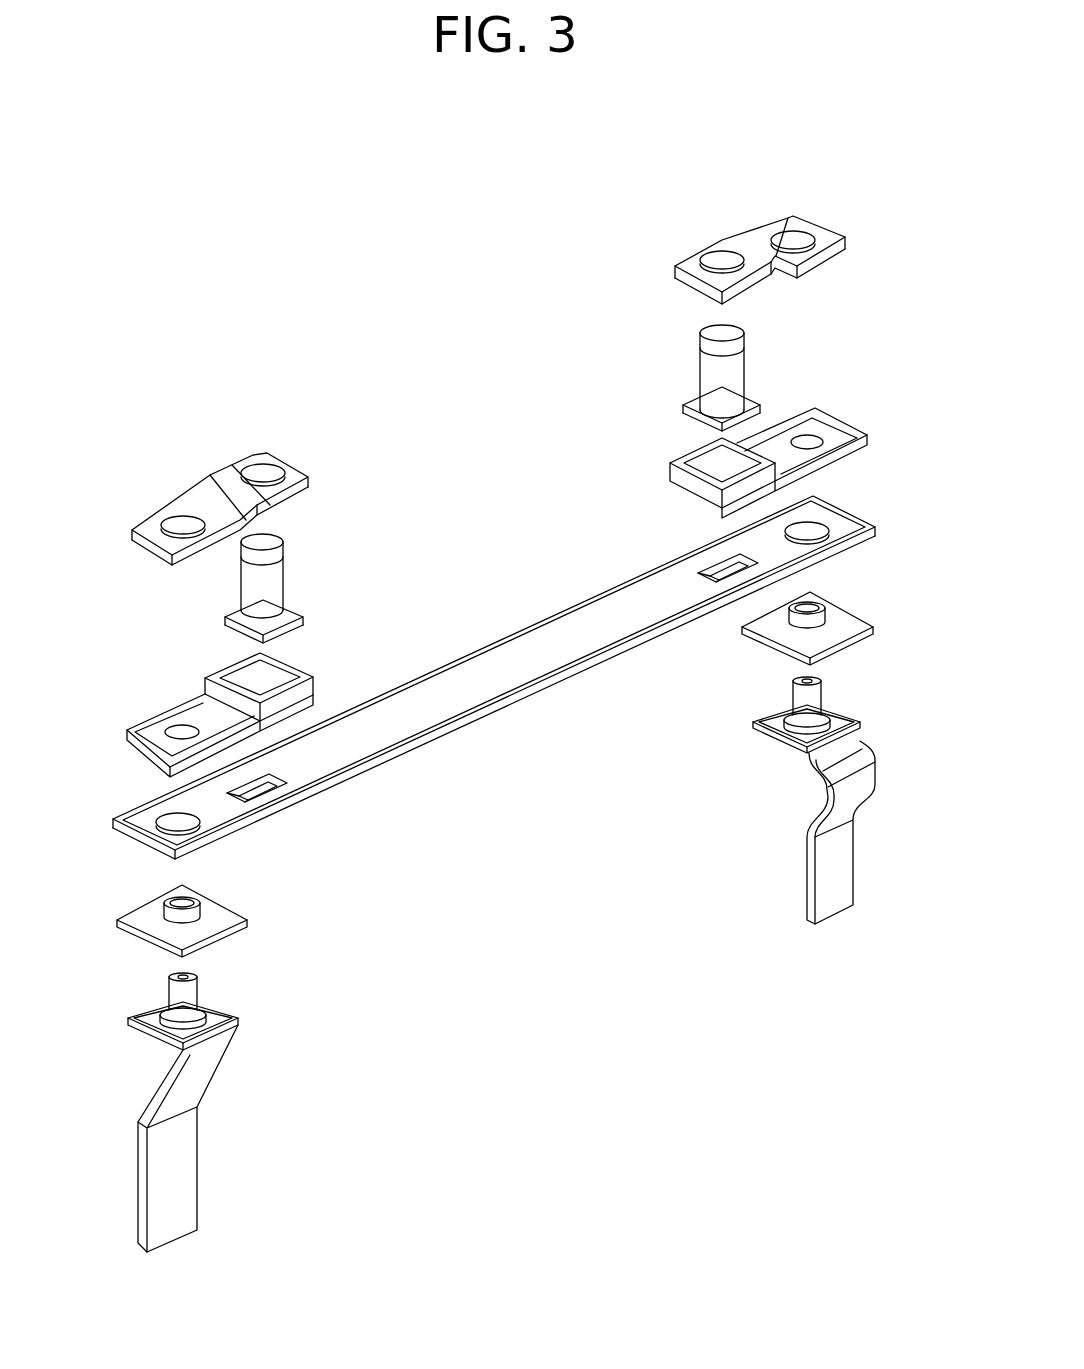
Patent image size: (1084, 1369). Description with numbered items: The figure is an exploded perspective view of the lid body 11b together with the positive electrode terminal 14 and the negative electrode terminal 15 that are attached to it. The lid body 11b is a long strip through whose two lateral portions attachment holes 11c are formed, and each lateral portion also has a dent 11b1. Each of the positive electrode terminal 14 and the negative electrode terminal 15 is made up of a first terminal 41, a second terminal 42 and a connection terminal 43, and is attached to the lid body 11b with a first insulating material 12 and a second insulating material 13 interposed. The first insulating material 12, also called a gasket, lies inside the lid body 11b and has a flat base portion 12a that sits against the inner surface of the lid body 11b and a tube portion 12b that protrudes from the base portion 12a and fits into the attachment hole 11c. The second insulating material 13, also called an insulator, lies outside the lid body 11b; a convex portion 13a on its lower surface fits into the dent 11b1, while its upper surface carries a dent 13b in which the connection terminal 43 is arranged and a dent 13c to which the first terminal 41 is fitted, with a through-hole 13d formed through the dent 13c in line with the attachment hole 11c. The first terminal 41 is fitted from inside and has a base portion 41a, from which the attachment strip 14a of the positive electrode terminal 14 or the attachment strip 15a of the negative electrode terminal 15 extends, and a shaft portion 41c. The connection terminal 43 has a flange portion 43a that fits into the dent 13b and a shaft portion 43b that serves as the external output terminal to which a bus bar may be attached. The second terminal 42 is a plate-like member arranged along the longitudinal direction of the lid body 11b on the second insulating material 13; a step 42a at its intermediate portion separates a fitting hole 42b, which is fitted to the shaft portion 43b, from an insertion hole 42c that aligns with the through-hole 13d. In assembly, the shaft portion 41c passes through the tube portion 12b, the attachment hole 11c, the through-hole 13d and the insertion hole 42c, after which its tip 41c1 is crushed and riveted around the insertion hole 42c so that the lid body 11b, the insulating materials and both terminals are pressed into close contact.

The lid body 11b is at (524, 671).
The dent 11b1 is at (285, 780).
The attachment hole 11c is at (198, 818).
The first insulating material 12 is at (497, 757).
The base portion 12a is at (220, 922).
The tube portion 12b is at (215, 910).
The second insulating material 13 is at (501, 561).
The convex portion 13a is at (274, 680).
The dent 13b is at (318, 686).
The dent 13c is at (190, 688).
The through-hole 13d is at (168, 725).
The positive electrode terminal 14 is at (206, 336).
The attachment strip 14a is at (195, 1190).
The negative electrode terminal 15 is at (595, 185).
The attachment strip 15a is at (822, 893).
The first terminal 41 is at (485, 963).
The base portion 41a is at (140, 1030).
The shaft portion 41c is at (176, 990).
The tip 41c1 is at (200, 972).
The second terminal 42 is at (468, 348).
The step 42a is at (205, 490).
The fitting hole 42b is at (275, 466).
The insertion hole 42c is at (175, 525).
The connection terminal 43 is at (492, 465).
The flange portion 43a is at (240, 618).
The shaft portion 43b is at (278, 592).